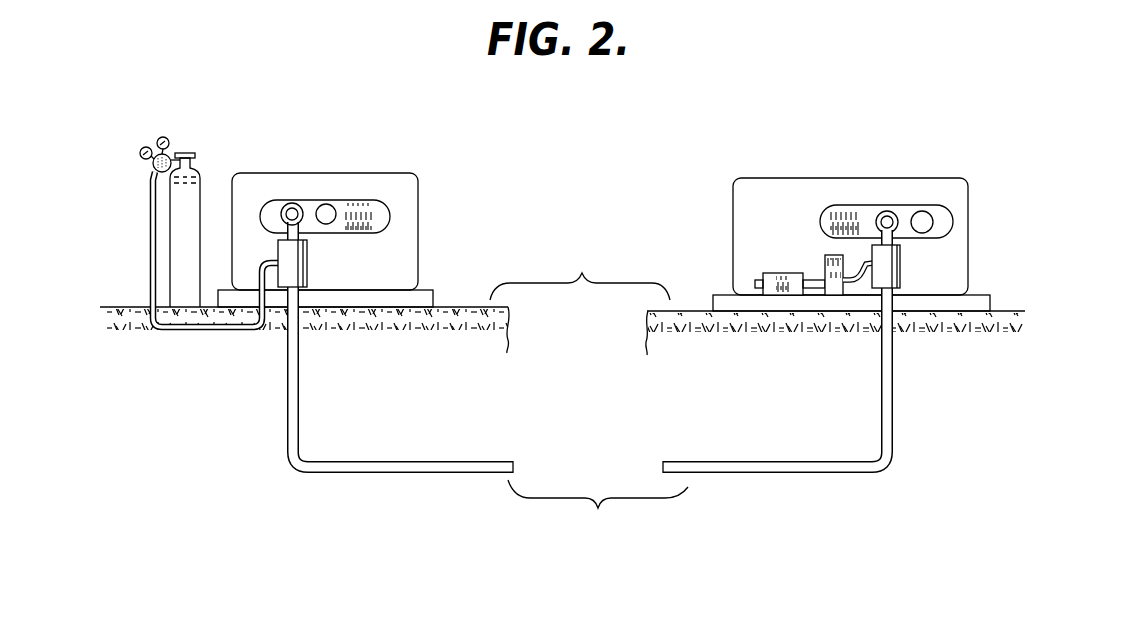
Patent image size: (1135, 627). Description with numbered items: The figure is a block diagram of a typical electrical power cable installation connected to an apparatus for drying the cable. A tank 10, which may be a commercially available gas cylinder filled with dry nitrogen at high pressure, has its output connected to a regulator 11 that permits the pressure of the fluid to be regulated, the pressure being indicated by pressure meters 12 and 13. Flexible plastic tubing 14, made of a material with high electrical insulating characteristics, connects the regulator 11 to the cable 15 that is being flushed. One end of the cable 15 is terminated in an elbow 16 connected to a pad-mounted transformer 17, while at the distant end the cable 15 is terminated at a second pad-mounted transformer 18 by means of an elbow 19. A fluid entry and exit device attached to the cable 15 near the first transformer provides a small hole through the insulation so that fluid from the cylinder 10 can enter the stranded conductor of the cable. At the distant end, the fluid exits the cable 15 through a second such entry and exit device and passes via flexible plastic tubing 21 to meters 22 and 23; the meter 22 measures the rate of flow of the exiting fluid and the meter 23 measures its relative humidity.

The tank 10 is at (198, 250).
The regulator 11 is at (154, 168).
The pressure meter 12 is at (166, 138).
The pressure meter 13 is at (145, 147).
The flexible plastic tubing 14 is at (216, 334).
The cable 15 is at (299, 414).
The elbow 16 is at (292, 204).
The pad-mounted transformer 17 is at (408, 215).
The pad-mounted transformer 18 is at (958, 180).
The elbow 19 is at (884, 212).
The flexible plastic tubing 21 is at (858, 270).
The meter 22 is at (826, 270).
The meter 23 is at (771, 274).